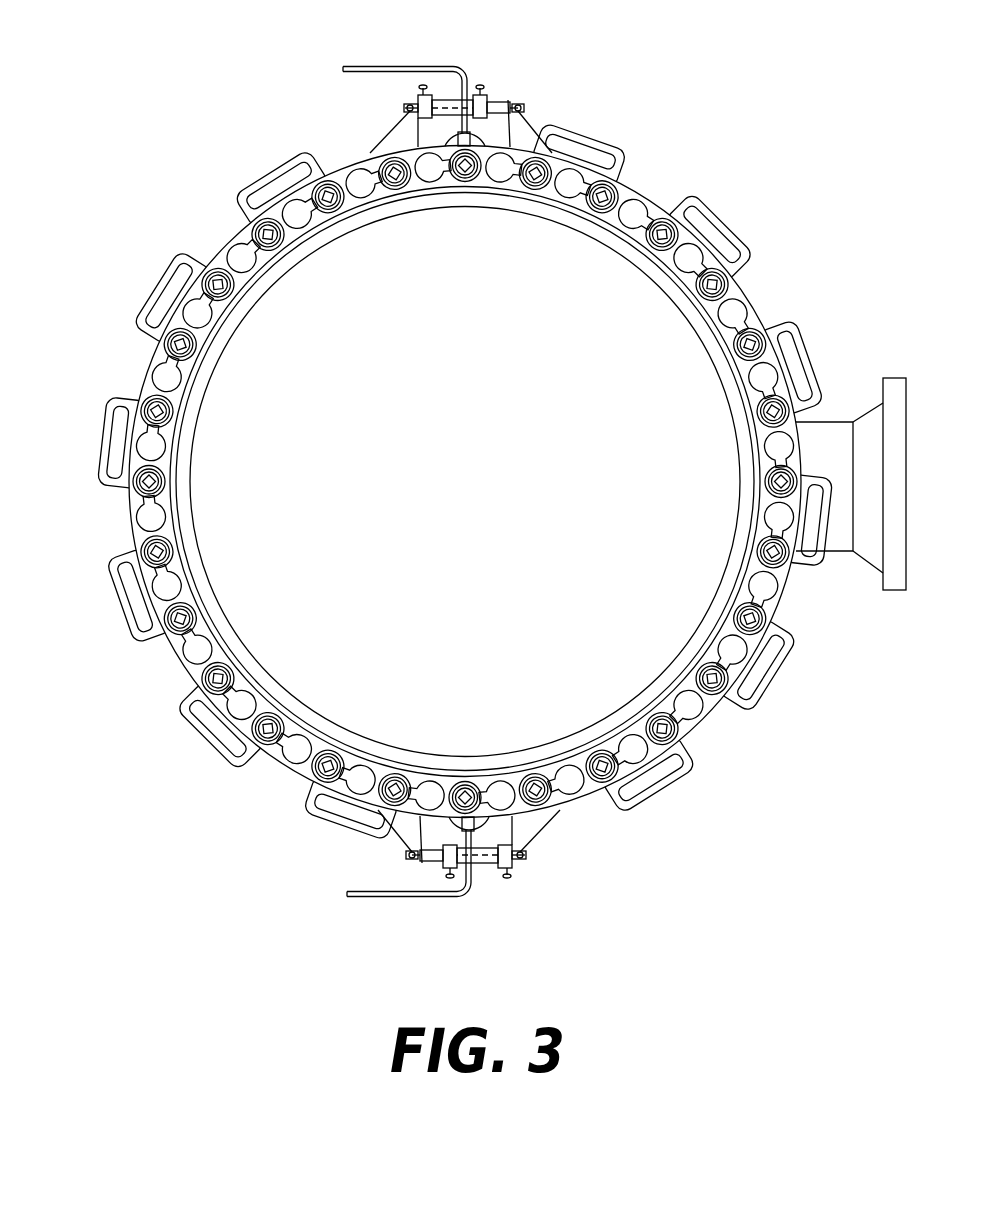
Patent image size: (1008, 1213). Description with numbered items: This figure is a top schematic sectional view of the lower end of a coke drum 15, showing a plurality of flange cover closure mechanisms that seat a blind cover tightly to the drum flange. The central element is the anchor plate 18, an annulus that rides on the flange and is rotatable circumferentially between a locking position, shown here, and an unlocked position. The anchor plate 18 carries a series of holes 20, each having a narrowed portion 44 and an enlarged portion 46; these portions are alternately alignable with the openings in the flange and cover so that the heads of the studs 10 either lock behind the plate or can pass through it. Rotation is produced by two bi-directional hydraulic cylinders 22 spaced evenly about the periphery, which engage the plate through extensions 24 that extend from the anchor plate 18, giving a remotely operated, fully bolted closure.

The stud 10 is at (250, 222).
The coke drum 15 is at (567, 407).
The anchor plate 18 is at (197, 672).
The hole 20 is at (618, 793).
The hydraulic cylinder 22 is at (448, 108).
The extension 24 is at (527, 136).
The narrowed portion 44 is at (288, 255).
The enlarged portion 46 is at (758, 305).